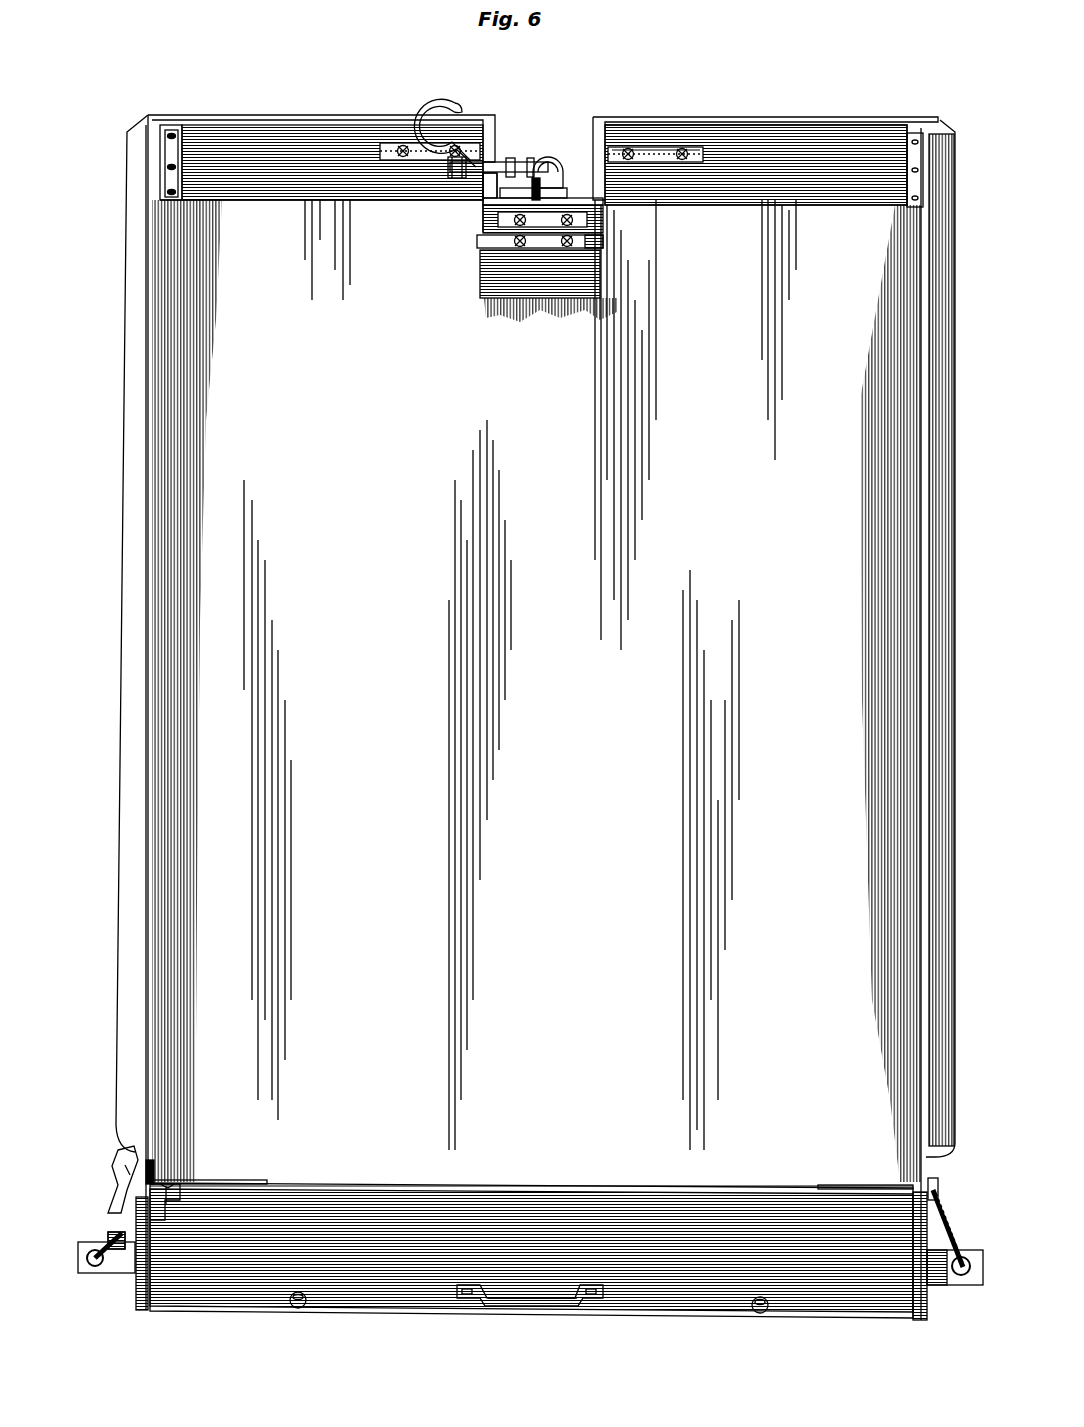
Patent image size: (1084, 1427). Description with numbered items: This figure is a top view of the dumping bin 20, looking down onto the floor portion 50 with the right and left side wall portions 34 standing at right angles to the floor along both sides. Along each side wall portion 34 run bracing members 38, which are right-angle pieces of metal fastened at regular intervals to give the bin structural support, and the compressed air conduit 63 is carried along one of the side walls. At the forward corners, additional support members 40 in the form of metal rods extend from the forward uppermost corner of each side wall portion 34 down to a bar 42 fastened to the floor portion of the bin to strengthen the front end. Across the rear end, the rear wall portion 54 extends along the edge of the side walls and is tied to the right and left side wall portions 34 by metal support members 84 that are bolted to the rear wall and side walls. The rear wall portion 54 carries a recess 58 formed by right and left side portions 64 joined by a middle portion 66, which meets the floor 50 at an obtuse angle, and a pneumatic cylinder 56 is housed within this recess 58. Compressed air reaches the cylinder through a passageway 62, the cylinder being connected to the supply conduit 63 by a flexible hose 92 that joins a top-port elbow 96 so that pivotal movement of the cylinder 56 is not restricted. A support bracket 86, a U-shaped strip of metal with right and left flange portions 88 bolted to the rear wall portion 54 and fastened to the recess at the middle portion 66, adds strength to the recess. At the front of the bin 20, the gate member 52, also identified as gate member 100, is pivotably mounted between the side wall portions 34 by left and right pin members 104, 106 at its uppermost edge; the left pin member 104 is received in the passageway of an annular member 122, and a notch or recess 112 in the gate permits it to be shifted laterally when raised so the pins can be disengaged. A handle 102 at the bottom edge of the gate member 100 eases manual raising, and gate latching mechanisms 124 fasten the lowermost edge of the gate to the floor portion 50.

The dumping bin 20 is at (840, 108).
The side wall portion 34 is at (148, 462).
The bracing member 38 is at (120, 970).
The additional support member 40 is at (108, 1237).
The bar 42 is at (113, 1274).
The floor portion 50 is at (596, 740).
The gate member 52 is at (405, 1243).
The rear wall portion 54 is at (305, 112).
The pneumatic cylinder 56 is at (555, 176).
The recess 58 is at (573, 116).
The passageway 62 is at (487, 198).
The conduit 63 is at (127, 1160).
The side portion 64 is at (490, 146).
The middle portion 66 is at (560, 283).
The support member 84 is at (917, 186).
The support bracket 86 is at (605, 240).
The flange portion 88 is at (665, 163).
The flexible hose 92 is at (447, 93).
The elbow 96 is at (531, 200).
The gate member 100 is at (640, 1190).
The handle 102 is at (530, 1306).
The left pin member 104 is at (212, 1180).
The right pin member 106 is at (850, 1185).
The recess 112 is at (165, 1183).
The annular member 122 is at (152, 1158).
The gate latching mechanism 124 is at (293, 1310).